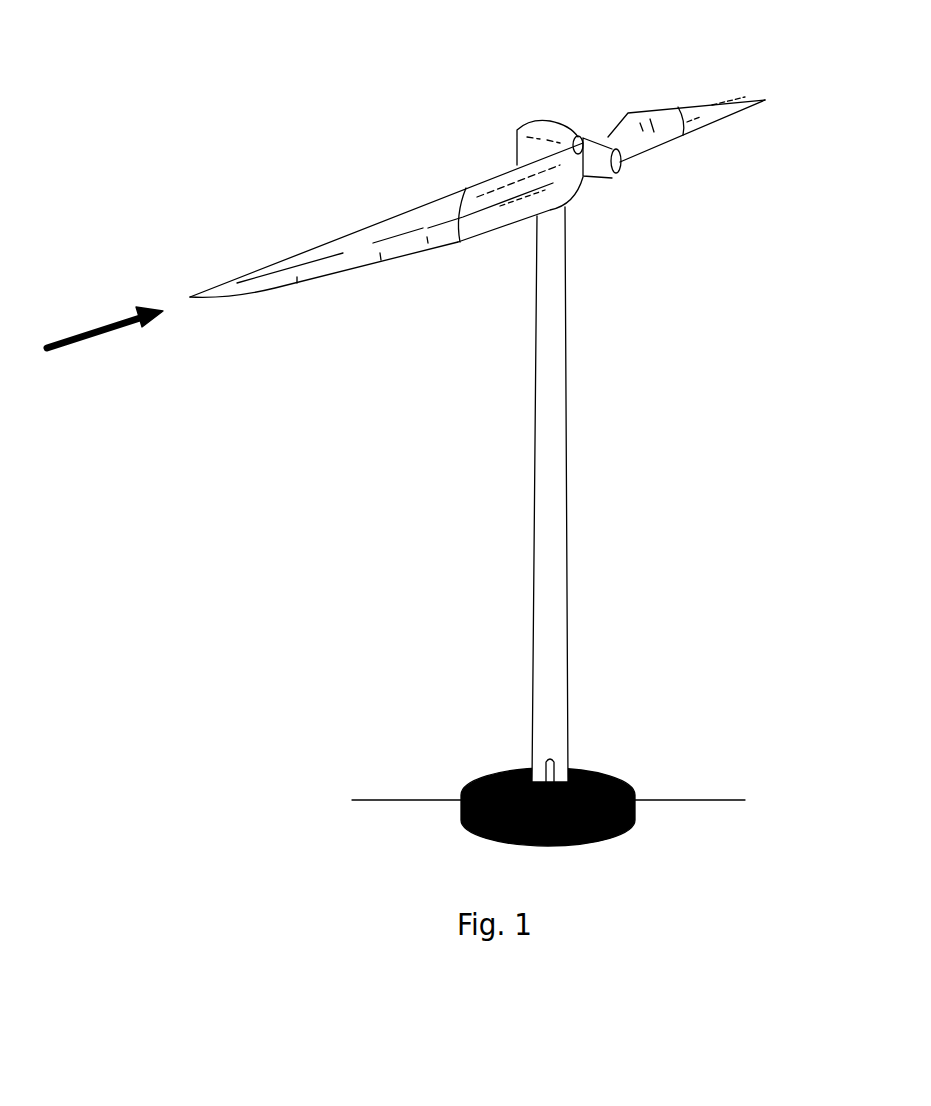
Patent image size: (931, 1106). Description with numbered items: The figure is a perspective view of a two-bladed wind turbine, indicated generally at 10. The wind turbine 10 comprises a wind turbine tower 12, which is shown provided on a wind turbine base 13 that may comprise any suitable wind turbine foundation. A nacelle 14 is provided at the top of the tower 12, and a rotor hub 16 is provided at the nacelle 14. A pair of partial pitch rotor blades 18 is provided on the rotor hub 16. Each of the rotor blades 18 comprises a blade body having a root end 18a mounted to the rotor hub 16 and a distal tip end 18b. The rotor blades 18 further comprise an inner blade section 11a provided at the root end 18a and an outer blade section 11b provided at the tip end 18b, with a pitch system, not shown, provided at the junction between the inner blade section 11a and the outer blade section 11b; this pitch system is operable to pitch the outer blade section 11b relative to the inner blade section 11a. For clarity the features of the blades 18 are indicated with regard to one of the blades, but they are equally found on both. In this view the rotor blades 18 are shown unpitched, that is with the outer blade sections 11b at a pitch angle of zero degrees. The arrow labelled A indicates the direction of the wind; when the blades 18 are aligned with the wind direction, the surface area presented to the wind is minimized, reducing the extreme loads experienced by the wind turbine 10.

The wind turbine 10 is at (200, 50).
The inner blade section 11a is at (512, 173).
The outer blade section 11b is at (357, 235).
The wind turbine tower 12 is at (550, 630).
The wind turbine base 13 is at (623, 837).
The nacelle 14 is at (542, 127).
The rotor hub 16 is at (617, 178).
The partial pitch rotor blade 18 is at (357, 265).
The root end 18a is at (590, 188).
The tip end 18b is at (200, 312).